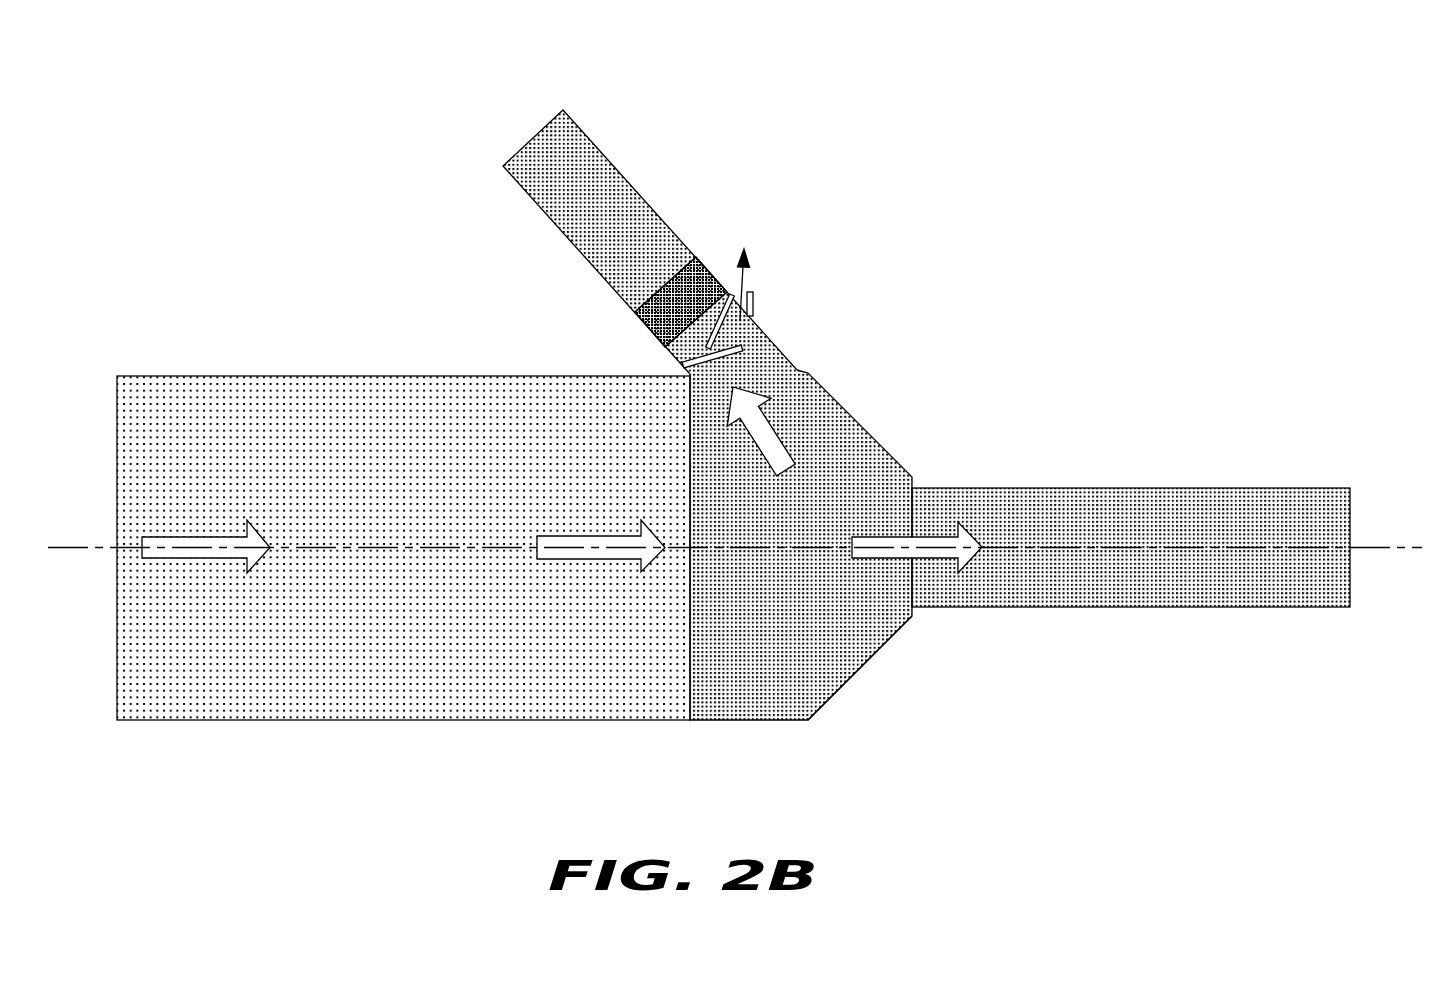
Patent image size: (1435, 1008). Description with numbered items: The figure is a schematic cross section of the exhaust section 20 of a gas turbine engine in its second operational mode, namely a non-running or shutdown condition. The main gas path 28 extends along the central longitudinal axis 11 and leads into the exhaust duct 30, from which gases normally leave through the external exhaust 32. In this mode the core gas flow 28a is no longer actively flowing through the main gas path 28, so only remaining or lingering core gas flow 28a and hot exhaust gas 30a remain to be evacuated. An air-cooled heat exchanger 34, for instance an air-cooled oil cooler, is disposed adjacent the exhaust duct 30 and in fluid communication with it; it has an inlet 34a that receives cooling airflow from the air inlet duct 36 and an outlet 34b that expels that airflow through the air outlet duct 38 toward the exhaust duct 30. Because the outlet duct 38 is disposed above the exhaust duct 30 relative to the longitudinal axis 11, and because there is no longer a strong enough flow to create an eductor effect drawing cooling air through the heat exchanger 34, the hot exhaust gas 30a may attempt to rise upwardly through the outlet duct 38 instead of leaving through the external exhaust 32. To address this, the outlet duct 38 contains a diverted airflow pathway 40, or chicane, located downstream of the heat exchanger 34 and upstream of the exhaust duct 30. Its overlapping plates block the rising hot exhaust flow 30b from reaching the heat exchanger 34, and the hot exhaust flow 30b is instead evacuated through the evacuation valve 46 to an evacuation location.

The exhaust section 20 is at (1017, 188).
The main gas path 28 is at (331, 658).
The core gas flow 28a is at (201, 549).
The exhaust duct 30 is at (767, 674).
The hot exhaust gas 30a is at (746, 280).
The hot exhaust flow 30b is at (862, 668).
The external exhaust 32 is at (1090, 590).
The air-cooled heat exchanger 34 is at (700, 273).
The inlet 34a is at (685, 280).
The outlet 34b is at (692, 318).
The air inlet duct 36 is at (631, 172).
The air outlet duct 38 is at (774, 358).
The diverted airflow pathway 40 is at (753, 331).
The evacuation valve 46 is at (754, 303).
The central longitudinal axis 11 is at (1393, 549).